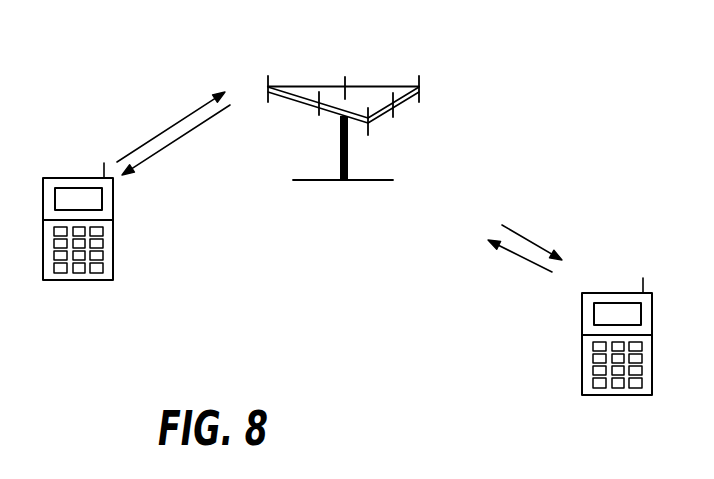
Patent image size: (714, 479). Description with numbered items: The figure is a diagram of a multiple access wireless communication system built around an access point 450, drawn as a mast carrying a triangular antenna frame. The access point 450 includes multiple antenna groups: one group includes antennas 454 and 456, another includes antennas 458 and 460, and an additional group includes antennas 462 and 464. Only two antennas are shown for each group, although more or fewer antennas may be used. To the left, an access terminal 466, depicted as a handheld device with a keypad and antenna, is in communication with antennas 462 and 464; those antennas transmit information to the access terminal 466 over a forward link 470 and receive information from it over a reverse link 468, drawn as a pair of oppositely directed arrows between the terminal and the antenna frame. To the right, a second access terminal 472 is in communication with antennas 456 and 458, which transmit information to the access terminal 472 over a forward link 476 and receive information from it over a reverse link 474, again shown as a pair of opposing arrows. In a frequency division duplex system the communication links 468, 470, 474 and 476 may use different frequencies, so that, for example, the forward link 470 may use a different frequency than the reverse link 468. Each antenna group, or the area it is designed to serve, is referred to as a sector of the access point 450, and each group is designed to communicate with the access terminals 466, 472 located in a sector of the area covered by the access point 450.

The access point 450 is at (338, 182).
The antenna 454 is at (378, 128).
The antenna 456 is at (398, 115).
The antenna 458 is at (423, 93).
The antenna 460 is at (345, 74).
The antenna 462 is at (268, 83).
The antenna 464 is at (319, 115).
The access terminal 466 is at (92, 177).
The reverse link 468 is at (168, 127).
The forward link 470 is at (182, 138).
The access terminal 472 is at (602, 293).
The reverse link 474 is at (513, 252).
The forward link 476 is at (535, 242).